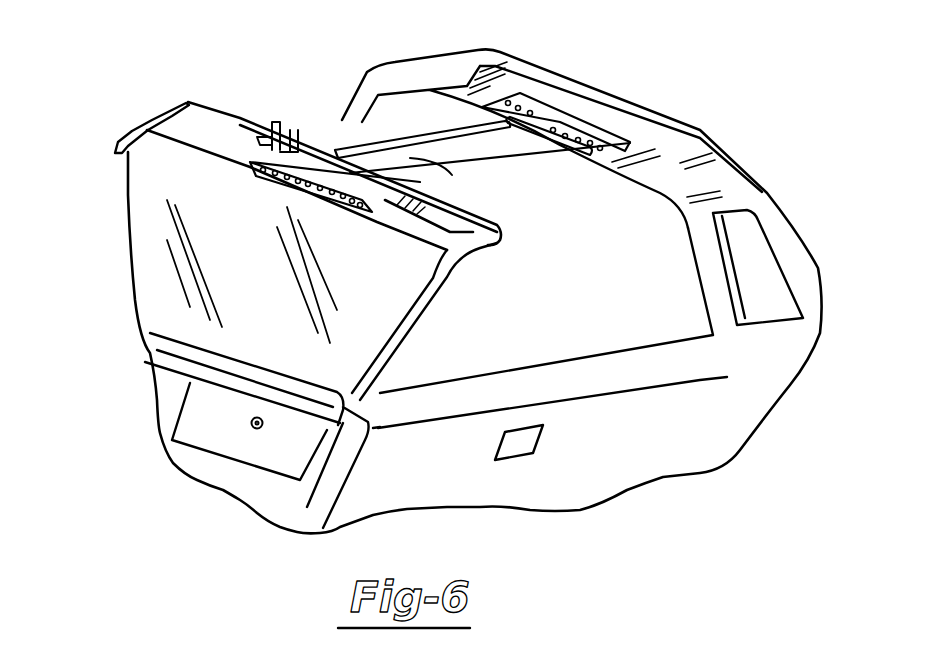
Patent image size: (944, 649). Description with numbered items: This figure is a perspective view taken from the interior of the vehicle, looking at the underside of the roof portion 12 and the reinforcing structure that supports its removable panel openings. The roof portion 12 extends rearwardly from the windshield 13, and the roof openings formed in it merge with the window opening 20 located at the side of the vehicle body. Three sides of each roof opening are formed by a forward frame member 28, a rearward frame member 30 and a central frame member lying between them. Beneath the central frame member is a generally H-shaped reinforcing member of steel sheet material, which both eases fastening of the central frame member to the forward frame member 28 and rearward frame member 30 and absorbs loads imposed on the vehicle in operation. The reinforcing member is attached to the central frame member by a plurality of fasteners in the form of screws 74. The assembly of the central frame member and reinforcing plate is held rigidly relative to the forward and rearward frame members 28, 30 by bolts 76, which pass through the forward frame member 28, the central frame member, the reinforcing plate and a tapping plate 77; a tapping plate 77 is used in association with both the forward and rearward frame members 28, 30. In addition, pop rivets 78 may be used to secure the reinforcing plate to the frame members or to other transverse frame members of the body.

The roof portion 12 is at (665, 105).
The windshield 13 is at (258, 285).
The window opening 20 is at (612, 321).
The forward frame member 28 is at (270, 130).
The rearward frame member 30 is at (633, 180).
The screws 74 is at (484, 144).
The bolts 76 is at (553, 125).
The tapping plate 77 is at (373, 147).
The pop rivets 78 is at (282, 178).